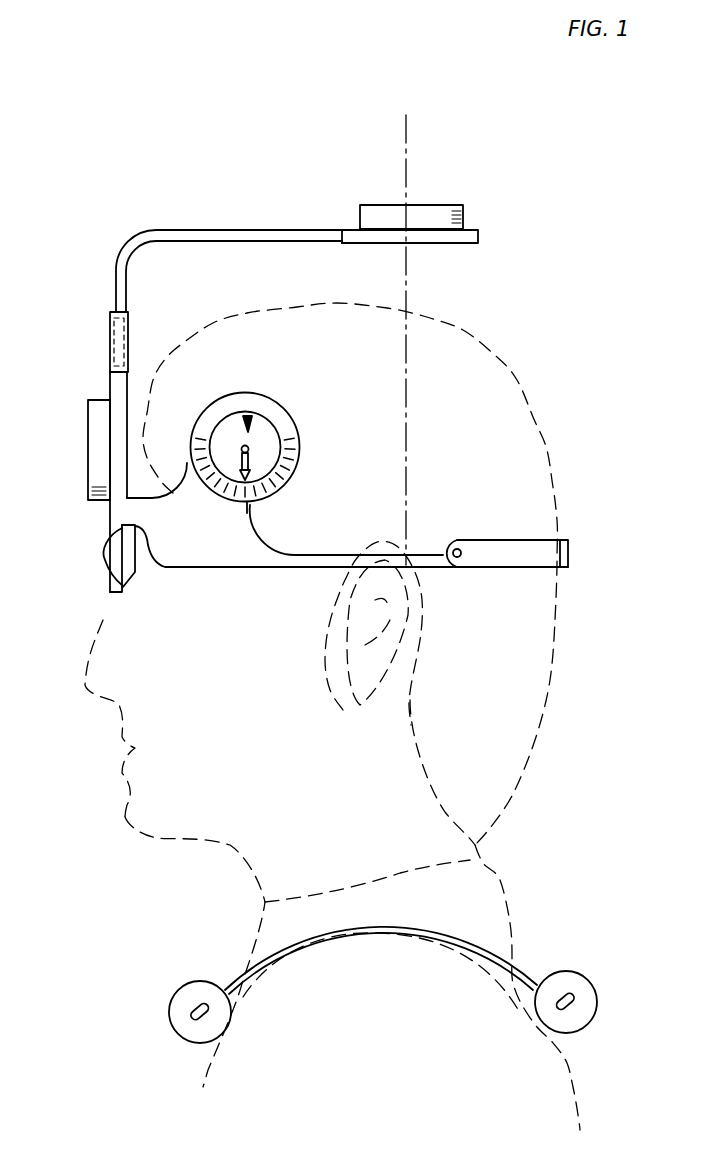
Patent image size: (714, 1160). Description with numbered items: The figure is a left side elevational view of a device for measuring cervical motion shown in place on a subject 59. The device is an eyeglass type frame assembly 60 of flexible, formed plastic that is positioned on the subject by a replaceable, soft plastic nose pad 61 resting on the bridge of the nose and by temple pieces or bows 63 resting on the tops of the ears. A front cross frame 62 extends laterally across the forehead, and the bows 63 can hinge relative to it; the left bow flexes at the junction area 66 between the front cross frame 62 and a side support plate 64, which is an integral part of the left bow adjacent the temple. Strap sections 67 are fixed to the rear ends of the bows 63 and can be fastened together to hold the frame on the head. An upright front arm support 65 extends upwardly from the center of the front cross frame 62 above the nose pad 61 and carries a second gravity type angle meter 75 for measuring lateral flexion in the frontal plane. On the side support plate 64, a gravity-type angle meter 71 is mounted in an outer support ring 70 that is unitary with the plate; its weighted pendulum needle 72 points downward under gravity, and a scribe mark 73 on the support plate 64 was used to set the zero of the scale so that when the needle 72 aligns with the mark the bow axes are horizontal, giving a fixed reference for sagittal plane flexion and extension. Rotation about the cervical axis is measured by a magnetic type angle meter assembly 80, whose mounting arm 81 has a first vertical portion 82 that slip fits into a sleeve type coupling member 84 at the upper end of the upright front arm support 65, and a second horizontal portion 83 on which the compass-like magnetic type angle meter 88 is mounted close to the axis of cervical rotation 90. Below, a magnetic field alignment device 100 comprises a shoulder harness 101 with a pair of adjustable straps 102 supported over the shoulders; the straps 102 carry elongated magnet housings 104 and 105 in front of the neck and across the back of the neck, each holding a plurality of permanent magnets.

The subject 59 is at (125, 805).
The eyeglass type frame assembly 60 is at (296, 536).
The nose pad 61 is at (105, 565).
The front cross frame 62 is at (120, 513).
The temple pieces or bows 63 is at (297, 553).
The side support plate 64 is at (205, 555).
The upright front arm support 65 is at (117, 383).
The junction area 66 is at (250, 540).
The strap sections 67 is at (495, 552).
The outer support ring 70 is at (261, 431).
The gravity-type angle meter 71 is at (250, 417).
The angle indicating pendulum needle 72 is at (255, 467).
The scribe mark 73 is at (243, 512).
The second gravity type angle meter 75 is at (87, 446).
The magnetic type angle meter assembly 80 is at (286, 262).
The mounting arm 81 is at (158, 230).
The first vertical portion 82 is at (117, 293).
The second horizontal portion 83 is at (262, 243).
The sleeve type coupling member 84 is at (112, 346).
The magnetic type angle meter 88 is at (465, 210).
The axis of cervical rotation 90 is at (408, 143).
The magnetic field alignment device 100 is at (383, 978).
The shoulder harness 101 is at (482, 950).
The adjustable straps 102 is at (375, 905).
The magnet housing 104 is at (193, 1027).
The magnet housing 105 is at (577, 1015).